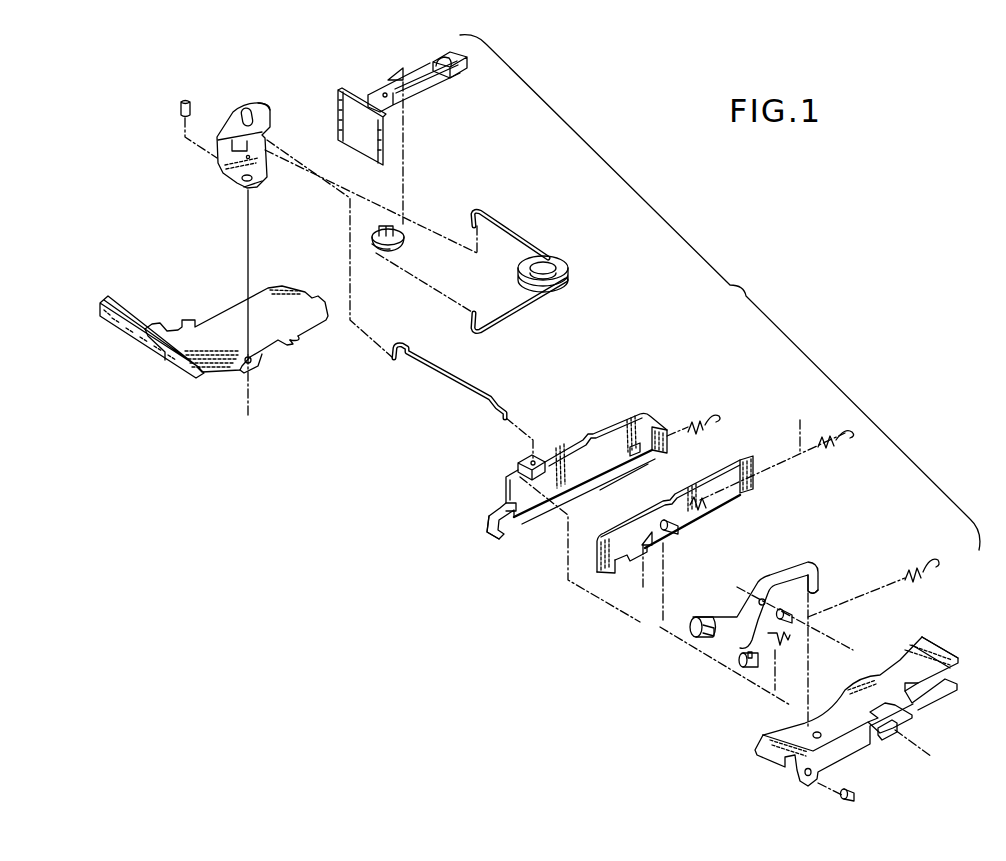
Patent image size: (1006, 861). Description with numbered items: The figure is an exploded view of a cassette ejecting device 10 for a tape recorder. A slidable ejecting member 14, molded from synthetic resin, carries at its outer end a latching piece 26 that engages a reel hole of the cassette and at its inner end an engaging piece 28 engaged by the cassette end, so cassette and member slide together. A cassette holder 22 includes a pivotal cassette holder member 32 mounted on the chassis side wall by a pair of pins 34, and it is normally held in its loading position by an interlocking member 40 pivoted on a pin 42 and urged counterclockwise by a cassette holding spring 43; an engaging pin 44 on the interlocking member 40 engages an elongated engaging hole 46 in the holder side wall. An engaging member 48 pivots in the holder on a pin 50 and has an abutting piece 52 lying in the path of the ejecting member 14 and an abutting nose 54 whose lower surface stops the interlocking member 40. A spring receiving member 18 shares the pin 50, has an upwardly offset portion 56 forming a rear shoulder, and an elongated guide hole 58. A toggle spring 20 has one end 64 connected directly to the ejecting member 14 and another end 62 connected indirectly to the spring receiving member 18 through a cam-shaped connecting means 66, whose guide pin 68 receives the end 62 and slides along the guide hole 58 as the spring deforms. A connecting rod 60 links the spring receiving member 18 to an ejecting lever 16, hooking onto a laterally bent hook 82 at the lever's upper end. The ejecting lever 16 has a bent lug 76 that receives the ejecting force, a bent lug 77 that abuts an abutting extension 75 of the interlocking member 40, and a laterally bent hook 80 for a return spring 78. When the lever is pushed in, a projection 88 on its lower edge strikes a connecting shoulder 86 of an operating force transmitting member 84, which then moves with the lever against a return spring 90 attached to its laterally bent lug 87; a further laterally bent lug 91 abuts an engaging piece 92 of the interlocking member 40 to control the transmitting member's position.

The cassette ejecting device 10 is at (720, 292).
The slidable ejecting member 14 is at (405, 68).
The ejecting lever 16 is at (575, 461).
The spring receiving member 18 is at (228, 130).
The toggle spring 20 is at (499, 258).
The cassette holder 22 is at (870, 693).
The latching piece 26 is at (468, 74).
The engaging piece 28 is at (338, 122).
The pivotal cassette holder member 32 is at (946, 656).
The pins 34 is at (856, 797).
The interlocking member 40 is at (774, 608).
The pin 42 is at (793, 613).
The cassette holding spring 43 is at (894, 570).
The engaging pin 44 is at (712, 617).
The elongated engaging hole 46 is at (897, 730).
The engaging member 48 is at (221, 348).
The pin 50 is at (181, 109).
The abutting piece 52 is at (130, 313).
The abutting nose 54 is at (304, 347).
The upwardly offset portion 56 is at (270, 110).
The elongated guide hole 58 is at (248, 110).
The connecting rod 60 is at (488, 392).
The end of toggle spring 62 is at (472, 323).
The other end of toggle spring 64 is at (475, 213).
The connecting means 66 is at (374, 253).
The guide pin 68 is at (383, 226).
The abutting extension 75 is at (819, 583).
The bent lug 76 is at (657, 424).
The bent lug 77 is at (505, 503).
The return spring 78 is at (619, 474).
The laterally bent hook 80 is at (487, 536).
The laterally bent hook 82 is at (537, 457).
The operating force transmitting member 84 is at (702, 507).
The connecting shoulder 86 is at (744, 453).
The laterally bent lug 87 is at (680, 533).
The projection 88 is at (640, 452).
The return spring 90 is at (777, 445).
The laterally bent lug 91 is at (631, 566).
The engaging piece 92 is at (778, 658).